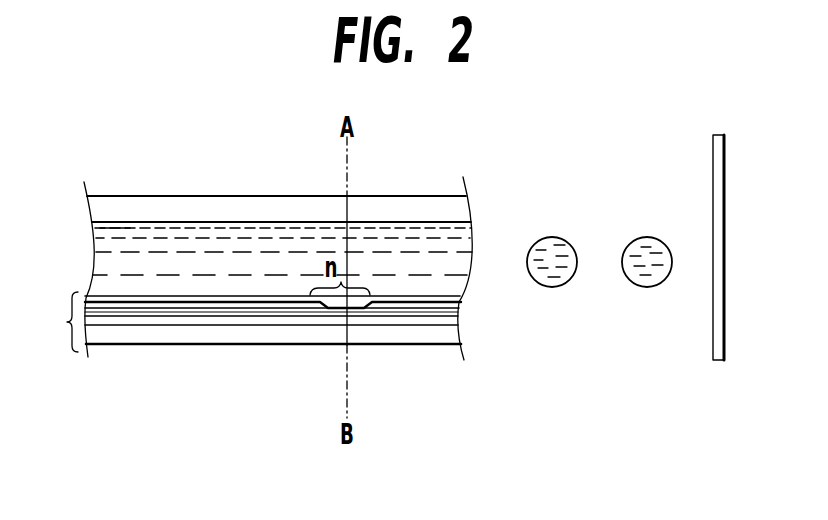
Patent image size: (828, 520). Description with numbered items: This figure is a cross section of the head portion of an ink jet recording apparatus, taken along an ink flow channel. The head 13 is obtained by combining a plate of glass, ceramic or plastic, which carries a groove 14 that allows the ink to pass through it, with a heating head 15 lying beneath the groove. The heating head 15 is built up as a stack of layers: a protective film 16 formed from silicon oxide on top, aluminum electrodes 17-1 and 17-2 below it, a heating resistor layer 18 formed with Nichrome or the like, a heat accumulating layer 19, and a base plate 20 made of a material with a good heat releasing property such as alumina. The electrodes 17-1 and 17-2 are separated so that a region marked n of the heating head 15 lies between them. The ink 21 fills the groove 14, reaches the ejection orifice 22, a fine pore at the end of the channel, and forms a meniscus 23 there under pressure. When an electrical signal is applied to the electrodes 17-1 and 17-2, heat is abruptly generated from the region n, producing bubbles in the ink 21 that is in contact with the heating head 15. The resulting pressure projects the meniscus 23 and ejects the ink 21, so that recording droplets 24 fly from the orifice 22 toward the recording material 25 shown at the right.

The head 13 is at (199, 196).
The groove 14 is at (258, 222).
The heating head 15 is at (58, 322).
The protective film 16 is at (135, 300).
The aluminum electrode 17-1 is at (187, 308).
The aluminum electrode 17-2 is at (434, 308).
The heating resistor layer 18 is at (257, 318).
The heat accumulating layer 19 is at (305, 322).
The base plate 20 is at (380, 338).
The ink 21 is at (114, 227).
The ejection orifice 22 is at (473, 288).
The meniscus 23 is at (469, 257).
The recording droplets 24 is at (518, 223).
The recording material 25 is at (715, 217).